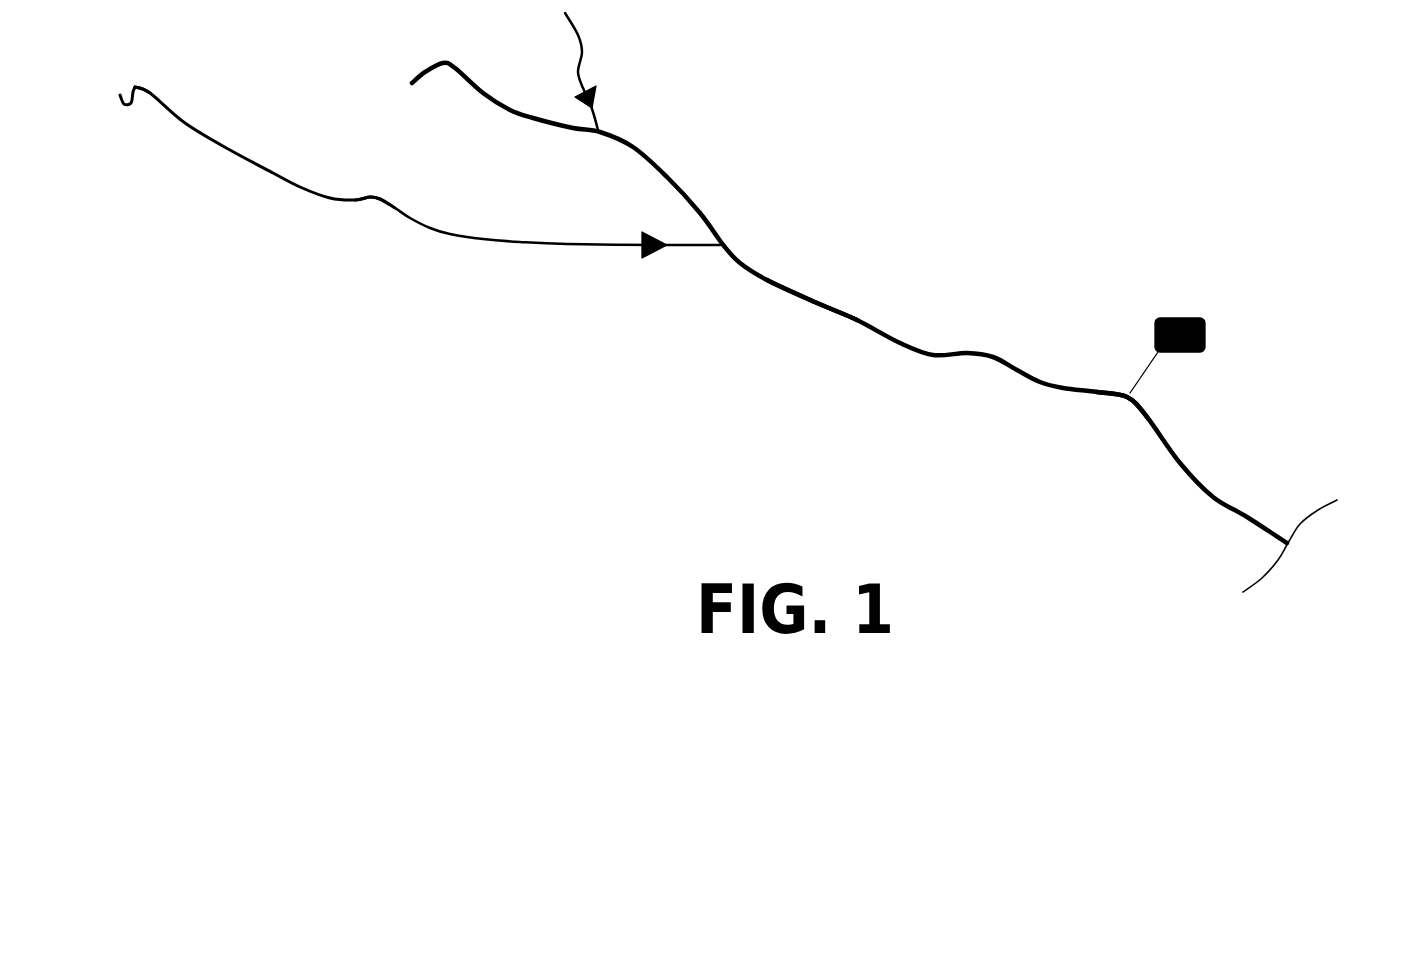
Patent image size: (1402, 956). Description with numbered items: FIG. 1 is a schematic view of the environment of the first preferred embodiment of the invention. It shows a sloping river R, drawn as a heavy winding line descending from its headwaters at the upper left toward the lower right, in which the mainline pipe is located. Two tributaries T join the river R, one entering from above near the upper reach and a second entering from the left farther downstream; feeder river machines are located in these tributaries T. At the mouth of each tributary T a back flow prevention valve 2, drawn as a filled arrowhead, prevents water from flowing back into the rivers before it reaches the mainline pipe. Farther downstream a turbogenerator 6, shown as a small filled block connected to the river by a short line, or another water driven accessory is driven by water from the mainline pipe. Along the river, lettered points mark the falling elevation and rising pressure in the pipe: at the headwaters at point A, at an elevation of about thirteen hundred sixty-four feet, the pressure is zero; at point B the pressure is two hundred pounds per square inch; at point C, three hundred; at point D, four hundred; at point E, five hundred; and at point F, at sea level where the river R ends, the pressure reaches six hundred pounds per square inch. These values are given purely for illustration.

The point A is at (119, 95).
The point B is at (273, 173).
The point C is at (523, 240).
The point D is at (825, 310).
The point E is at (1137, 412).
The point F is at (1288, 545).
The sloping river R is at (853, 318).
The tributary T is at (580, 30).
The back flow prevention valve 2 is at (660, 250).
The turbogenerator 6 is at (1205, 322).